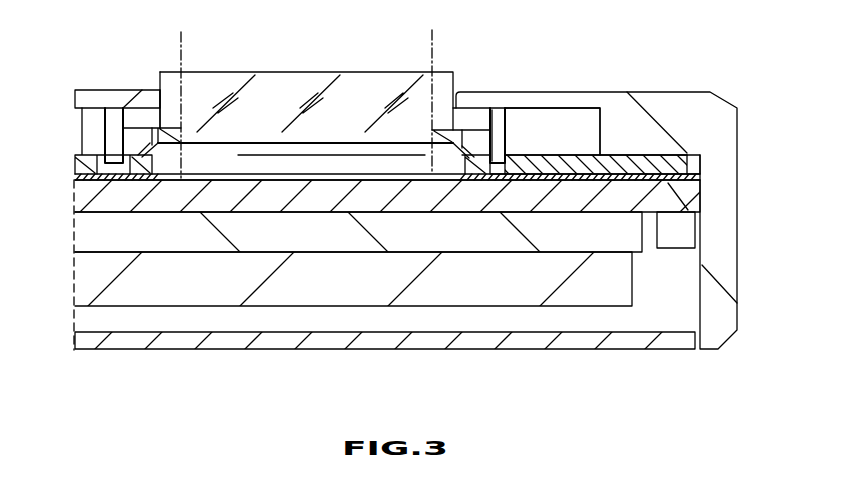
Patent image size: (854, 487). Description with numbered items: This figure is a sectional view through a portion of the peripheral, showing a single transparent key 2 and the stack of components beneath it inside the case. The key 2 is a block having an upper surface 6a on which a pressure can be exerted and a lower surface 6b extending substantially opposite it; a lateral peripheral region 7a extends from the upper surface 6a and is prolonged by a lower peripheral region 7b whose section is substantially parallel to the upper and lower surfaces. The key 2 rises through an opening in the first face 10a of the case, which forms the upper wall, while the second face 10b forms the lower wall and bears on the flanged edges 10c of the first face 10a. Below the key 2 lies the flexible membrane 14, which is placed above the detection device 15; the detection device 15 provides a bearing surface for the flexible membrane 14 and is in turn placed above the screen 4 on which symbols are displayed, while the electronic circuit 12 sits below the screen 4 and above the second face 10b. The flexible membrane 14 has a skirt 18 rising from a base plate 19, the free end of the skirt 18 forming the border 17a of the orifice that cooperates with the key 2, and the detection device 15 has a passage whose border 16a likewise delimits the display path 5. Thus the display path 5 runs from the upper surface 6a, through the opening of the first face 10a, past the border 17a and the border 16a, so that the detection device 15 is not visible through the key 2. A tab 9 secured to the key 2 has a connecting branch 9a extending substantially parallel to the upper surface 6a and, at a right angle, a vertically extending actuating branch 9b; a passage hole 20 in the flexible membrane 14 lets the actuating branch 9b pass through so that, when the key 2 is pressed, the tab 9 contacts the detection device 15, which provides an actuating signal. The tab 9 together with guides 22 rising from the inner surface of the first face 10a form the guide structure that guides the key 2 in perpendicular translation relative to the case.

The key 2 is at (313, 82).
The screen 4 is at (672, 198).
The display path 5 is at (432, 37).
The upper surface 6a is at (372, 72).
The lower surface 6b is at (252, 142).
The lateral peripheral region 7a is at (160, 80).
The lower peripheral region 7b is at (172, 135).
The tab 9 is at (518, 130).
The connecting branch 9a is at (138, 120).
The actuating branch 9b is at (115, 148).
The first face 10a is at (678, 102).
The second face 10b is at (625, 348).
The flanged edges 10c is at (725, 306).
The electronic circuit 12 is at (620, 230).
The flexible membrane 14 is at (620, 167).
The detection device 15 is at (705, 178).
The border 16a is at (170, 182).
The border 17a is at (152, 153).
The skirt 18 is at (498, 143).
The base plate 19 is at (688, 153).
The passage hole 20 is at (492, 172).
The guides 22 is at (522, 108).